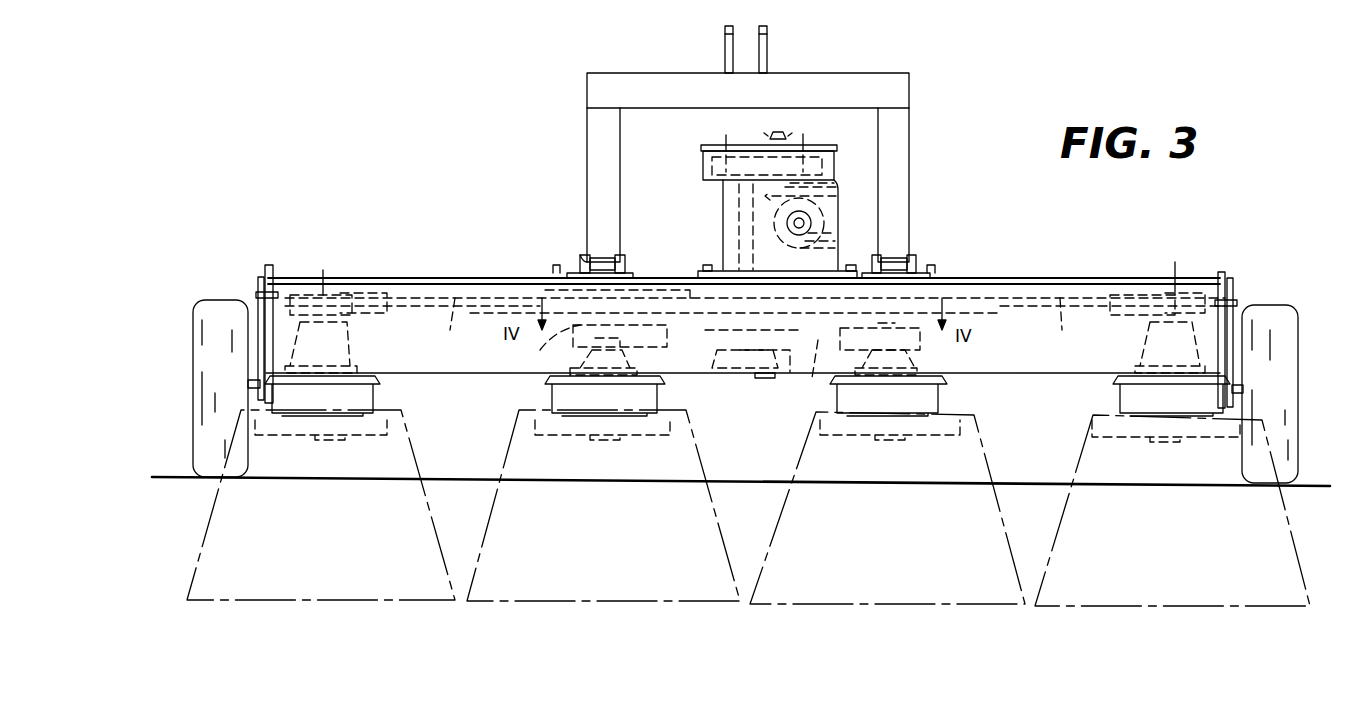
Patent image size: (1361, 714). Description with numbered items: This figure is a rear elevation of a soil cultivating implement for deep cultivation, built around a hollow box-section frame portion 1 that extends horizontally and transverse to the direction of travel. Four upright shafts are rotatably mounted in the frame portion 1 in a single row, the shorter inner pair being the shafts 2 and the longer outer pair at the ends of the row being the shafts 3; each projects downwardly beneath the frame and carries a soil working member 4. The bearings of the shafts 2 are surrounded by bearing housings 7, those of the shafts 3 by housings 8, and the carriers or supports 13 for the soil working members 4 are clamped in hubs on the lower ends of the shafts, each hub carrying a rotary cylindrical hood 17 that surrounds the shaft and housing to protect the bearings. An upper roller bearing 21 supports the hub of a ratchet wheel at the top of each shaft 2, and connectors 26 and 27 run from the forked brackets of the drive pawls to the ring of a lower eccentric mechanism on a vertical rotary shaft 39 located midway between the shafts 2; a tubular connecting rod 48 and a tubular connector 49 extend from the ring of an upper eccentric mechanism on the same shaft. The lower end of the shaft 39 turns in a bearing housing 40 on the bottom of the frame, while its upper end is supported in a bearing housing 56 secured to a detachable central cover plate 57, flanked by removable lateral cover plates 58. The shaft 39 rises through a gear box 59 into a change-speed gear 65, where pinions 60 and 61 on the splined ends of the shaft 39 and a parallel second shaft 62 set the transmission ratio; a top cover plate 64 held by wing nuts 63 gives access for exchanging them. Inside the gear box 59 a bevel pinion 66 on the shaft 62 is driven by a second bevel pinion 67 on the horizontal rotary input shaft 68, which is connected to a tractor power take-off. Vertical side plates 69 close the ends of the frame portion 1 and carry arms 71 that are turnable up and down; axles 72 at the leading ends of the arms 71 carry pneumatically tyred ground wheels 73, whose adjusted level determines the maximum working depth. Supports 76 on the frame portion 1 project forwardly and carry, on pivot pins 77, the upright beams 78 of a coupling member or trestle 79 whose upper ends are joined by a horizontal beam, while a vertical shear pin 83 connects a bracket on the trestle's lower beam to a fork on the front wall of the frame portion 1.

The hollow box-section frame portion 1 is at (455, 302).
The shafts 2 is at (560, 338).
The shafts 3 is at (323, 270).
The soil working member 4 is at (208, 518).
The bearing housings 7 is at (522, 376).
The housings 8 is at (356, 341).
The carriers or supports 13 is at (348, 433).
The cylindrical hood 17 is at (372, 400).
The upper roller bearing 21 is at (258, 280).
The connector 26 is at (815, 378).
The connector 27 is at (705, 350).
The rotary shaft 39 is at (722, 200).
The bearing housing 40 is at (772, 380).
The tubular connecting rod 48 is at (455, 315).
The tubular connector 49 is at (1062, 325).
The bearing housing 56 is at (782, 277).
The central cover plate 57 is at (700, 274).
The lateral cover plates 58 is at (400, 278).
The gear box 59 is at (745, 226).
The pinion 60 is at (724, 140).
The pinion 61 is at (806, 140).
The second shaft 62 is at (838, 190).
The wing nuts 63 is at (780, 139).
The top cover plate 64 is at (695, 147).
The change-speed gear 65 is at (700, 164).
The bevel pinion 66 is at (824, 216).
The second bevel pinion 67 is at (880, 218).
The rotary input shaft 68 is at (826, 242).
The side plates 69 is at (274, 267).
The arms 71 is at (1235, 282).
The axles 72 is at (248, 384).
The ground wheels 73 is at (200, 332).
The supports 76 is at (602, 256).
The pivot pin 77 is at (557, 266).
The upright beam 78 is at (590, 150).
The coupling member or trestle 79 is at (862, 72).
The shear pin 83 is at (745, 380).